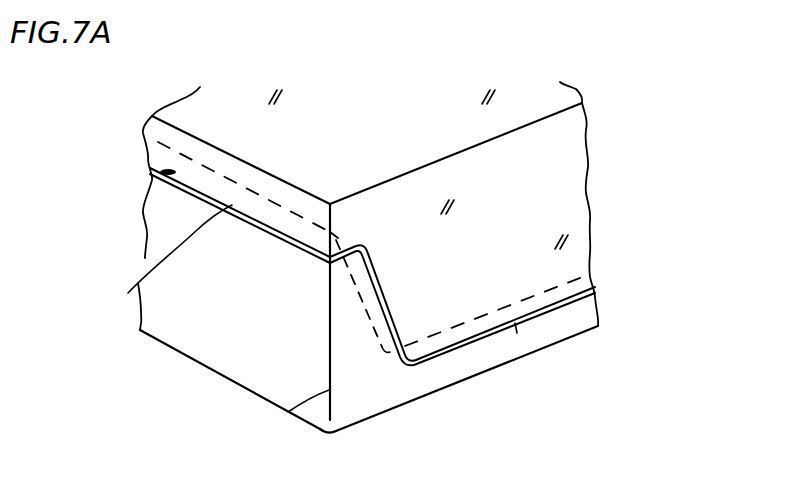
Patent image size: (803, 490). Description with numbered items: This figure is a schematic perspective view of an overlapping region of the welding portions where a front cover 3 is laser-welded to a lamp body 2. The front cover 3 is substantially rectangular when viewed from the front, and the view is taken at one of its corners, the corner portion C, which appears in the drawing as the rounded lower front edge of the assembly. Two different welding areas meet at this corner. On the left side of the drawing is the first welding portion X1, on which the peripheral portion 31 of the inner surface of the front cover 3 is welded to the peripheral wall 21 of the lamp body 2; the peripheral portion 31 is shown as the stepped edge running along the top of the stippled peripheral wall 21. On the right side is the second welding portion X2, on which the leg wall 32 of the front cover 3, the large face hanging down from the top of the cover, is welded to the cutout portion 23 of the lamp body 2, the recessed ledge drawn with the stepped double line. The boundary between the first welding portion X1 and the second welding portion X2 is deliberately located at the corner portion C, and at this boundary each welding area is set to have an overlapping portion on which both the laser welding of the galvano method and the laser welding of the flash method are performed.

The front cover 3 is at (590, 130).
The peripheral portion of the inner surface of the front cover 31 is at (148, 186).
The leg wall 32 is at (545, 223).
The cutout portion 23 is at (580, 291).
The peripheral wall 21 is at (197, 328).
The lamp body 2 is at (397, 402).
The corner portion C is at (290, 410).
The first welding portion X1 is at (128, 293).
The second welding portion X2 is at (517, 333).